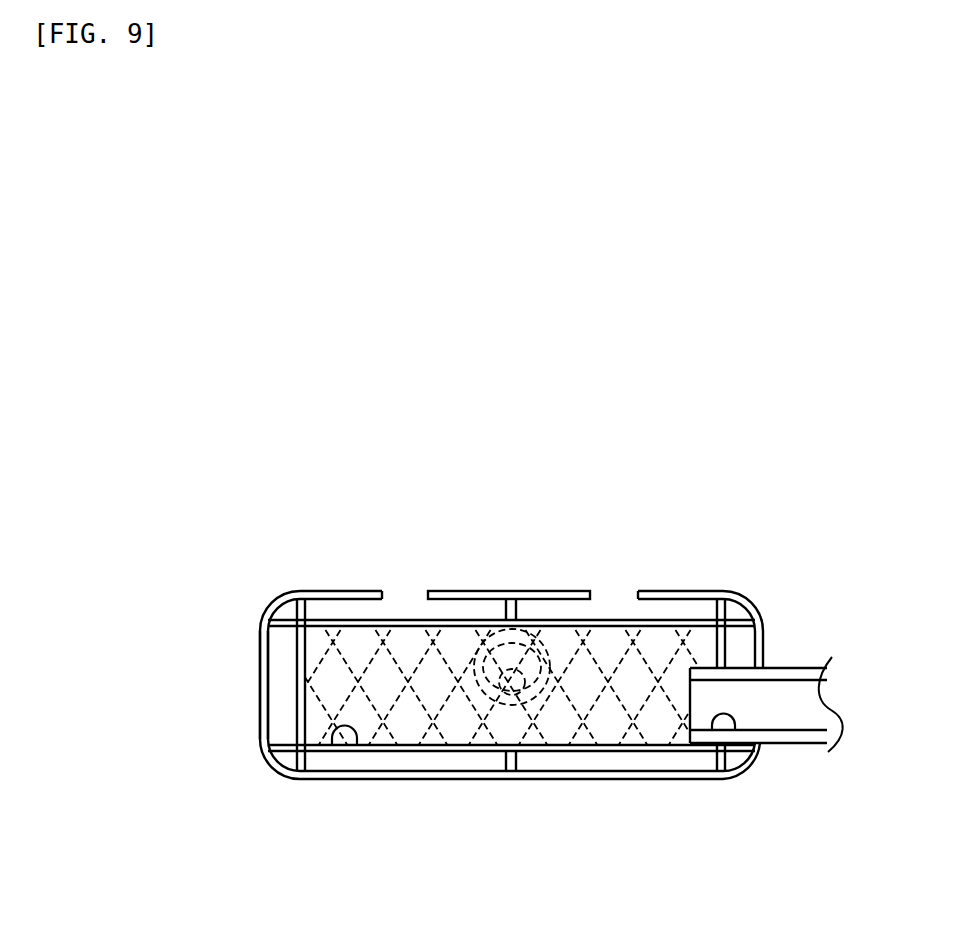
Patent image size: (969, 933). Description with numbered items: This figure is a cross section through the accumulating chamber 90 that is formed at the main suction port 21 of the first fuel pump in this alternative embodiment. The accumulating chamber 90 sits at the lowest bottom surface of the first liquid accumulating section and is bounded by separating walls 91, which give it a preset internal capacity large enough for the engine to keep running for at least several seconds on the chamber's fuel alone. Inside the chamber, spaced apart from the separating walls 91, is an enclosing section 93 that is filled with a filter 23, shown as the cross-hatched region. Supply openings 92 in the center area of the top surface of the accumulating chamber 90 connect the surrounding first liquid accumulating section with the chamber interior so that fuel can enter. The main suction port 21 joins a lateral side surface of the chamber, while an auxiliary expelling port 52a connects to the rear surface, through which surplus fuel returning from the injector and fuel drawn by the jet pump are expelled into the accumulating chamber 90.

The accumulating chamber 90 is at (309, 589).
The separating walls 91 is at (260, 687).
The supply openings 92 is at (428, 597).
The enclosing section 93 is at (333, 743).
The filter 23 is at (405, 720).
The auxiliary expelling port 52a is at (528, 689).
The main suction port 21 is at (735, 729).